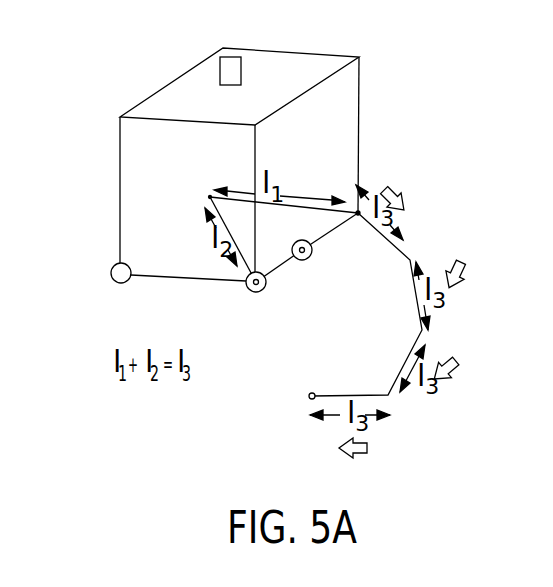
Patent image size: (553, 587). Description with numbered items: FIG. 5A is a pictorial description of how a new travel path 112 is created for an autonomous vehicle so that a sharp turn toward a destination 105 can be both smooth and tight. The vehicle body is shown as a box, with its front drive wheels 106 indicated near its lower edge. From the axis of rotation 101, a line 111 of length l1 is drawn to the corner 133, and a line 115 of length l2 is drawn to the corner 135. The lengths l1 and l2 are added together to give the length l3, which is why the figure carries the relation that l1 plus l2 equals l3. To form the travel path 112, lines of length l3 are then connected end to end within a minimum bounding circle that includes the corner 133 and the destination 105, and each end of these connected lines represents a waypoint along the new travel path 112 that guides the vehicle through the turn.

The axis of rotation 101 is at (211, 192).
The destination 105 is at (310, 400).
The front drive wheels 106 is at (312, 257).
The line 111 is at (304, 208).
The travel path 112 is at (420, 220).
The line 115 is at (208, 196).
The corner 133 is at (353, 204).
The corner 135 is at (257, 293).